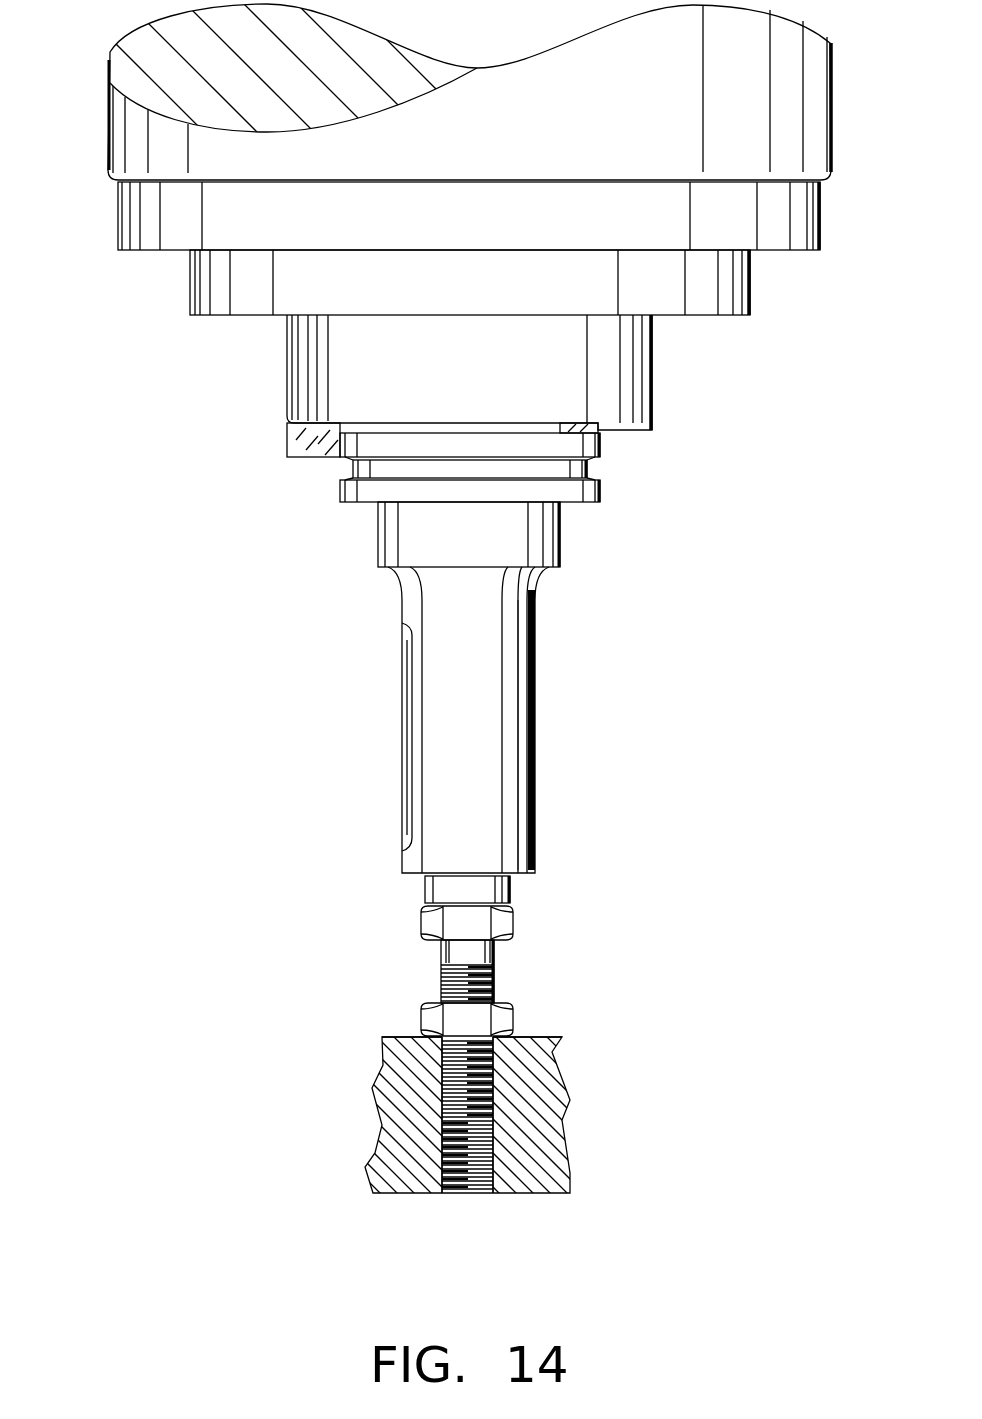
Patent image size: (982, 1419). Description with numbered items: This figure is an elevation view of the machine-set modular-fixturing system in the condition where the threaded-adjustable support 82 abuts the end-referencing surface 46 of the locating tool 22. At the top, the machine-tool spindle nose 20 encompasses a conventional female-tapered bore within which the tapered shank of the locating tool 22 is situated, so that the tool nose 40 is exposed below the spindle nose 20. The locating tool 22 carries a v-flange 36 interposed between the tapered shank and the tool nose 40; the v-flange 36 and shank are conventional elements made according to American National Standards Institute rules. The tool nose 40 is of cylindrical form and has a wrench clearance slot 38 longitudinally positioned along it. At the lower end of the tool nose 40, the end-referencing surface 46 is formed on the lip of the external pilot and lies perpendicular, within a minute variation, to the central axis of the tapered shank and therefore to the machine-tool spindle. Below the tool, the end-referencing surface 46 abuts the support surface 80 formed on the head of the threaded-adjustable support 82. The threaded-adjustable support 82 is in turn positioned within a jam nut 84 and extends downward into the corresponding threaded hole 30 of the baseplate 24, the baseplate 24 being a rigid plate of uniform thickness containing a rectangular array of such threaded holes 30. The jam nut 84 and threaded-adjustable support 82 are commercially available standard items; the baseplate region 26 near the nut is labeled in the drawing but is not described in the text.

The machine-tool spindle nose 20 is at (272, 367).
The locating tool 22 is at (472, 687).
The baseplate 24 is at (463, 1115).
The upper surface of base plate 26 is at (383, 1035).
The threaded hole 30 is at (483, 1150).
The v-flange 36 is at (353, 467).
The wrench clearance slot 38 is at (405, 742).
The tool nose 40 is at (520, 753).
The end-referencing surface 46 is at (433, 910).
The support surface 80 is at (473, 898).
The threaded-adjustable support 82 is at (510, 971).
The jam nut 84 is at (513, 1017).